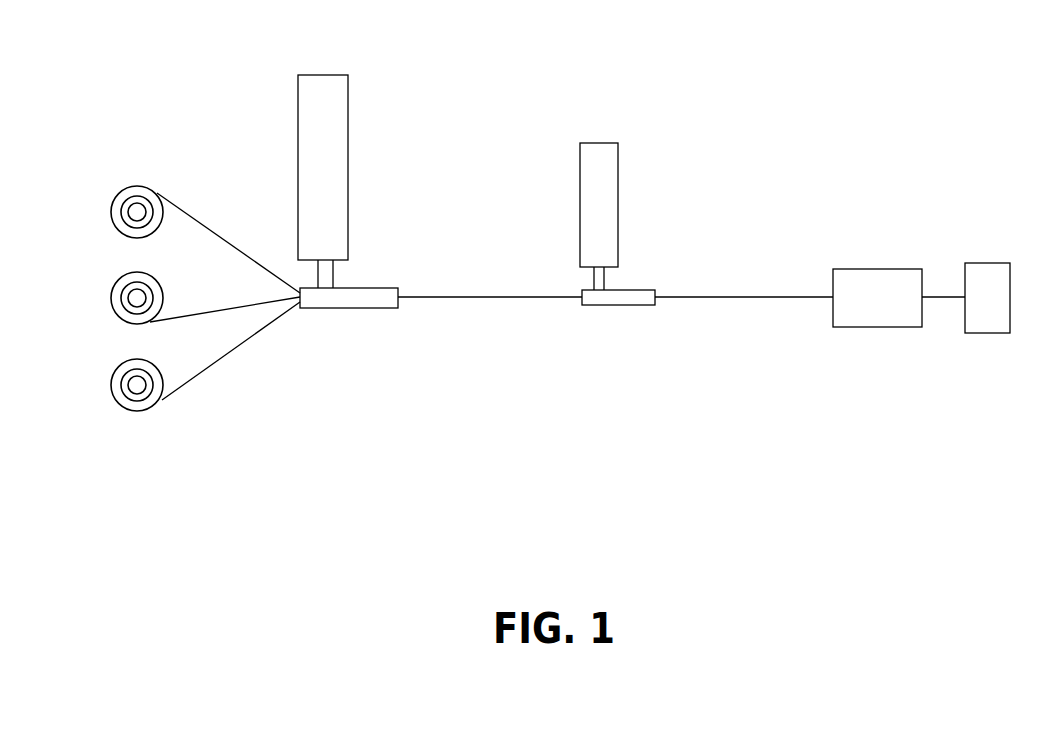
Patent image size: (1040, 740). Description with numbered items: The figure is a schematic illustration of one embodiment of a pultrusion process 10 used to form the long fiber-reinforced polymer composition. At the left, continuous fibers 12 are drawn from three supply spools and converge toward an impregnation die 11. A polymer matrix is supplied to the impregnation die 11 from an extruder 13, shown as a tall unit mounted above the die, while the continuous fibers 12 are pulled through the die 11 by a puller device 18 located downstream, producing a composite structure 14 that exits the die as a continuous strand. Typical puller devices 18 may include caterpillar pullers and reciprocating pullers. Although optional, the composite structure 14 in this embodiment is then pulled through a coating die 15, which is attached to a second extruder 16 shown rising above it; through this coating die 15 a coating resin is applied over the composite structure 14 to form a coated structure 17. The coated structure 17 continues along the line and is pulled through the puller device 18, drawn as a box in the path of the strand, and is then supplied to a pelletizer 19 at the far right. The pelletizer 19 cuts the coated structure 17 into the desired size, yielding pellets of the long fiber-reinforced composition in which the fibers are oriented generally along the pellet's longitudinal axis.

The pultrusion process 10 is at (557, 392).
The impregnation die 11 is at (363, 308).
The continuous fibers 12 is at (140, 412).
The extruder 13 is at (348, 118).
The composite structure 14 is at (453, 297).
The coating die 15 is at (632, 305).
The extruder 16 is at (618, 205).
The coated structure 17 is at (765, 297).
The puller device 18 is at (875, 269).
The pelletizer 19 is at (987, 333).